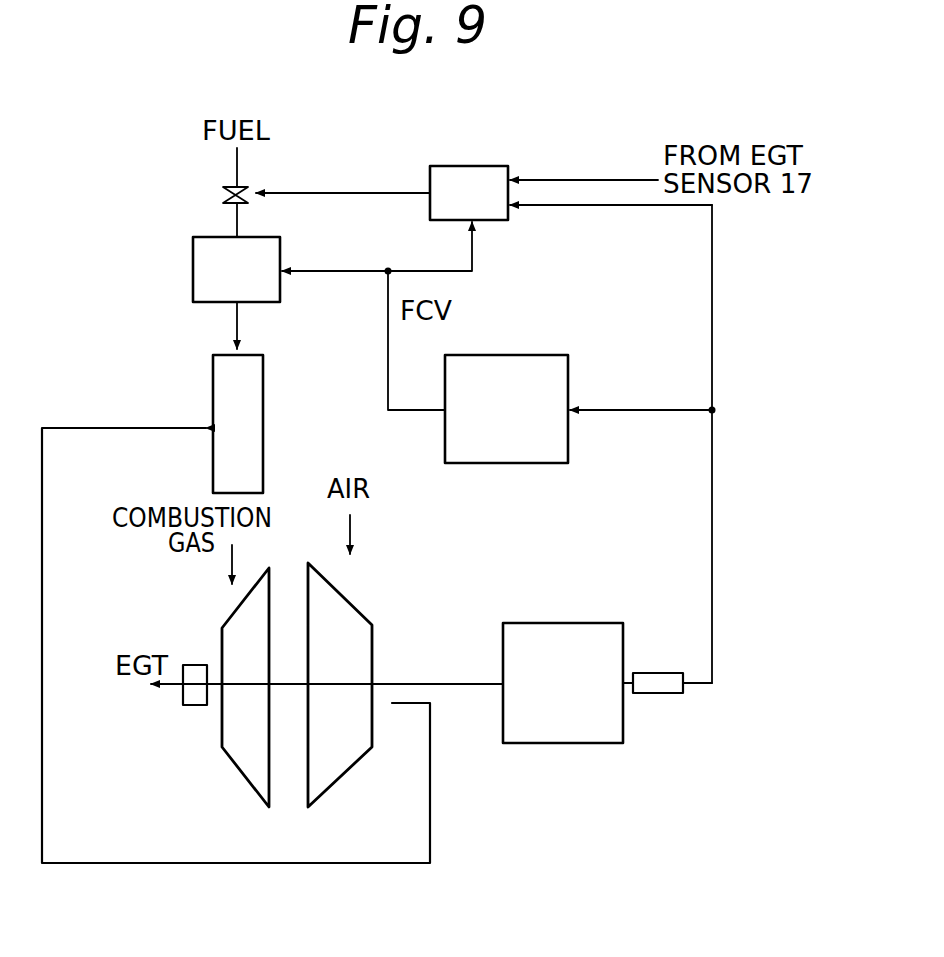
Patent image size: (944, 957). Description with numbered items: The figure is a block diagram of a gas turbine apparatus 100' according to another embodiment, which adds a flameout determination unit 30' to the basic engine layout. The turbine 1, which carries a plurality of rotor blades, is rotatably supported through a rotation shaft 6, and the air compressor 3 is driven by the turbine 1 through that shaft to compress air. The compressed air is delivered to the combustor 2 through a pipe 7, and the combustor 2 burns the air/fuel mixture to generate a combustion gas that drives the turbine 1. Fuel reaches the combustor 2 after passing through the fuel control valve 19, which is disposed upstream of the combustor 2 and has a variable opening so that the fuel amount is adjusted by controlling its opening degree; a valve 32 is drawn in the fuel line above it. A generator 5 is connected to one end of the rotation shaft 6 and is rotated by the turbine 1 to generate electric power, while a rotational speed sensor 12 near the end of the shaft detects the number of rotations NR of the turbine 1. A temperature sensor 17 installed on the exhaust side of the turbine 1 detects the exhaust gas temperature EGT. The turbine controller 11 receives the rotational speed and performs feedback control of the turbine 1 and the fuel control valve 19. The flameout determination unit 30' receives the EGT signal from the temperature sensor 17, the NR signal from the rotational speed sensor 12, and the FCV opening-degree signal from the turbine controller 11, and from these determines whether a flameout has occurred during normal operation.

The turbine 1 is at (240, 773).
The combustor 2 is at (264, 423).
The air compressor 3 is at (337, 782).
The generator 5 is at (565, 623).
The rotation shaft 6 is at (440, 683).
The pipe 7 is at (431, 825).
The turbine controller 11 is at (517, 355).
The rotational speed sensor 12 is at (655, 694).
The temperature sensor 17 is at (194, 707).
The fuel control valve 19 is at (193, 272).
The flameout determination unit 30' is at (512, 158).
The fuel valve 32 is at (228, 188).
The gas turbine apparatus 100' is at (591, 913).